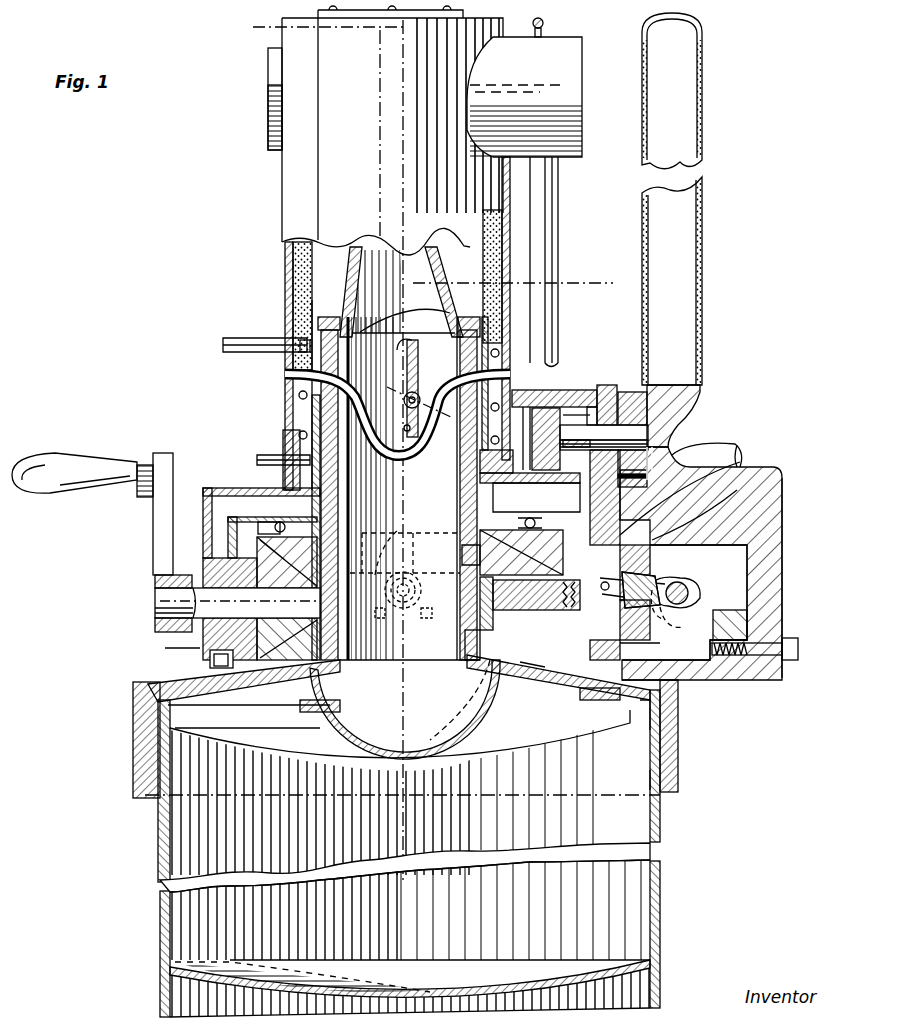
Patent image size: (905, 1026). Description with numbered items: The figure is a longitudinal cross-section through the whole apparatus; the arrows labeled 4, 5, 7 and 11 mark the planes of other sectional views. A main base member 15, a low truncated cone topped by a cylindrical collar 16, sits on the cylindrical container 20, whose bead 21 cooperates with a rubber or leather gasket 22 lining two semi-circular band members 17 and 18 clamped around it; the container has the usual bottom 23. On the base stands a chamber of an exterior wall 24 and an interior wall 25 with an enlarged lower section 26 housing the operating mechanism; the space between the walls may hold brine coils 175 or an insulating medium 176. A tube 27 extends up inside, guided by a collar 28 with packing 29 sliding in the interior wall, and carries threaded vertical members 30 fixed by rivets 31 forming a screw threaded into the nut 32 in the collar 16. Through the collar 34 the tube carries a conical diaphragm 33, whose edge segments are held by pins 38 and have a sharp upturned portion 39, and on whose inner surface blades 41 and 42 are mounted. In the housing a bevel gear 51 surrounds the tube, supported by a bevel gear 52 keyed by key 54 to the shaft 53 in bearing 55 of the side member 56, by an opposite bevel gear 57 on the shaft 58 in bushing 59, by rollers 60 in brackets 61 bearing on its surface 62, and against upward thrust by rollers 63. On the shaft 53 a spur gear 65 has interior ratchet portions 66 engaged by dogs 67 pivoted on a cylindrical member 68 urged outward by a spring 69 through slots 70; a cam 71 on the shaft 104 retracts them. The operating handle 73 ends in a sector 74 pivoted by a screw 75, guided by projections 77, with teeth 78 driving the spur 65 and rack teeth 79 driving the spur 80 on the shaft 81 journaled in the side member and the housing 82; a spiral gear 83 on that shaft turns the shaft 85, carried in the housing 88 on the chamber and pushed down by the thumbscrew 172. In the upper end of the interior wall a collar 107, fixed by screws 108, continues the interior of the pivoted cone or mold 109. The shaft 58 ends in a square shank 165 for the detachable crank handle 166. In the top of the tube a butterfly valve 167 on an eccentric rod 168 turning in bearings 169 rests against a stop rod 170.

The section line 4- 4 is at (182, 652).
The section line 5- 5 is at (200, 818).
The section line 7- 7 is at (253, 28).
The section line 11- 11 is at (568, 313).
The main base member 15 is at (150, 680).
The collar 16 is at (258, 653).
The semi-circular band member 17 is at (133, 760).
The semi-circular band member 18 is at (678, 722).
The cylindrical container 20 is at (660, 890).
The bead 21 is at (650, 737).
The gasket 22 is at (650, 771).
The bottom 23 is at (410, 988).
The exterior wall 24 is at (379, 174).
The interior wall 25 is at (316, 302).
The enlarged section 26 is at (204, 540).
The tube 27 is at (405, 535).
The ring or collar 28 is at (300, 362).
The packing material 29 is at (503, 350).
The vertically extending members 30 is at (470, 472).
The rivets 31 is at (470, 555).
The nut 32 is at (485, 612).
The diaphragm 33 is at (537, 670).
The collar 34 is at (473, 645).
The pins 38 is at (254, 715).
The upturned portion 39 is at (680, 700).
The blade 41 is at (463, 712).
The blade 42 is at (340, 726).
The bevel gear 51 is at (283, 520).
The bevel gear 52 is at (469, 700).
The shaft 53 is at (487, 668).
The key 54 is at (550, 675).
The bearing 55 is at (580, 560).
The side member 56 is at (604, 385).
The bevel gear 57 is at (262, 565).
The shaft 58 is at (200, 628).
The bushing 59 is at (212, 576).
The rollers 60 is at (420, 590).
The brackets 61 is at (418, 622).
The surface 62 is at (372, 578).
The rollers 63 is at (530, 528).
The spur gear 65 is at (650, 560).
The ratchet portions 66 is at (660, 572).
The dogs 67 is at (650, 640).
The cylindrical member 68 is at (599, 649).
The spring 69 is at (707, 455).
The slot 70 is at (660, 640).
The cam 71 is at (690, 593).
The operating handle 73 is at (690, 330).
The sector 74 is at (768, 532).
The screw 75 is at (772, 660).
The projections 77 is at (708, 563).
The teeth 78 is at (684, 600).
The teeth 79 is at (749, 457).
The spur 80 is at (660, 415).
The shaft 81 is at (648, 433).
The housing 82 is at (580, 392).
The spiral gear 83 is at (515, 390).
The shaft 85 is at (545, 210).
The housing 88 is at (524, 97).
The shaft 104 is at (697, 600).
The collar 107 is at (318, 320).
The screws 108 is at (409, 292).
The cone or mold 109 is at (450, 305).
The square shank 165 is at (165, 598).
The crank and operating handle 166 is at (125, 455).
The butterfly valve 167 is at (418, 358).
The rod 168 is at (418, 390).
The bearings 169 is at (406, 394).
The rod 170 is at (413, 445).
The thumbscrew 172 is at (545, 23).
The coils 175 is at (248, 348).
The heat insulating medium 176 is at (553, 258).